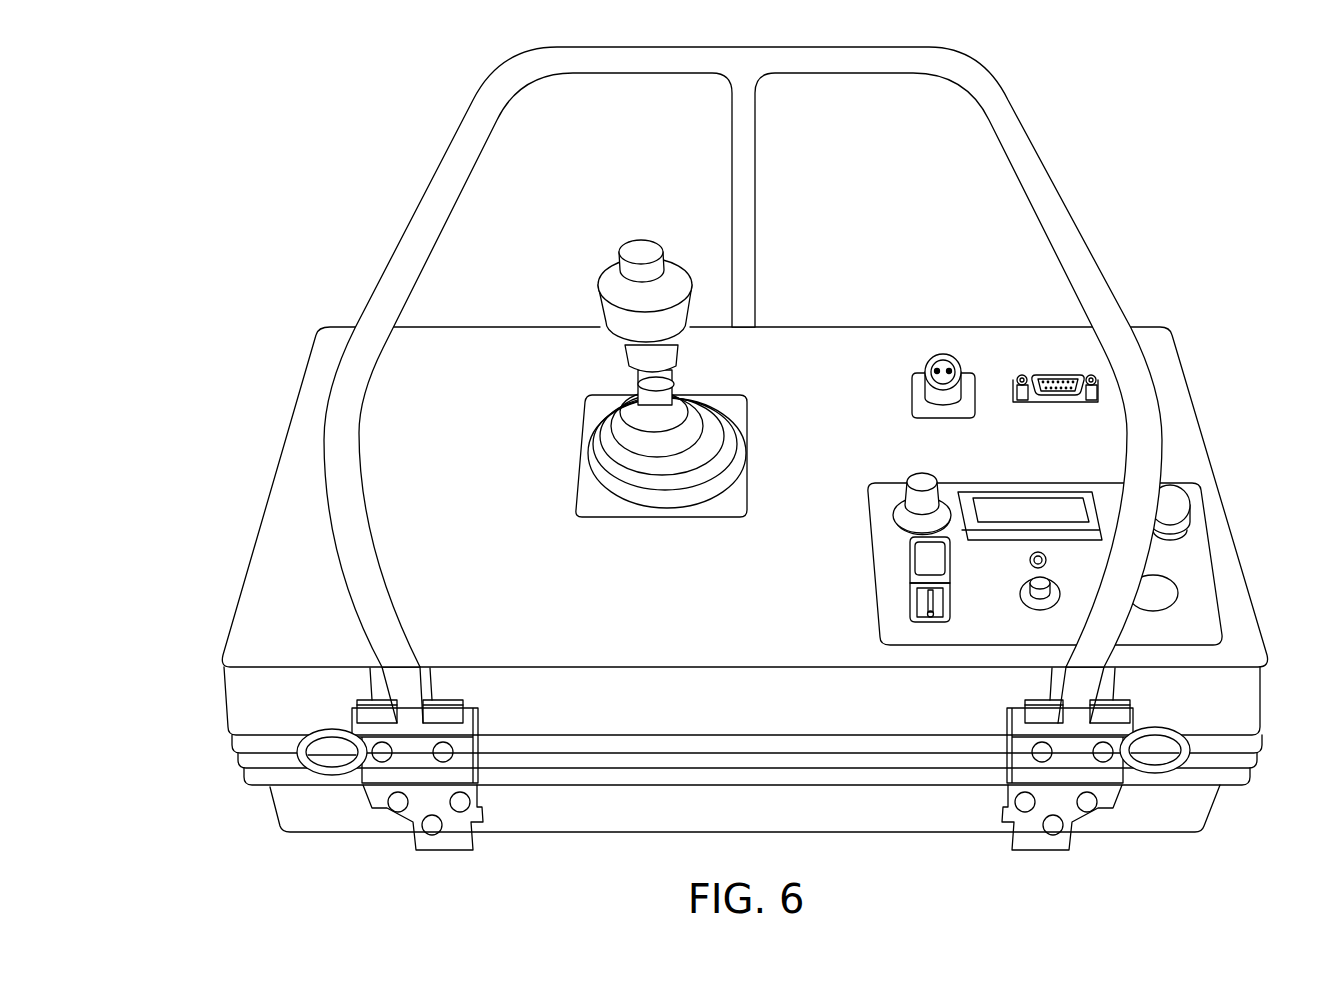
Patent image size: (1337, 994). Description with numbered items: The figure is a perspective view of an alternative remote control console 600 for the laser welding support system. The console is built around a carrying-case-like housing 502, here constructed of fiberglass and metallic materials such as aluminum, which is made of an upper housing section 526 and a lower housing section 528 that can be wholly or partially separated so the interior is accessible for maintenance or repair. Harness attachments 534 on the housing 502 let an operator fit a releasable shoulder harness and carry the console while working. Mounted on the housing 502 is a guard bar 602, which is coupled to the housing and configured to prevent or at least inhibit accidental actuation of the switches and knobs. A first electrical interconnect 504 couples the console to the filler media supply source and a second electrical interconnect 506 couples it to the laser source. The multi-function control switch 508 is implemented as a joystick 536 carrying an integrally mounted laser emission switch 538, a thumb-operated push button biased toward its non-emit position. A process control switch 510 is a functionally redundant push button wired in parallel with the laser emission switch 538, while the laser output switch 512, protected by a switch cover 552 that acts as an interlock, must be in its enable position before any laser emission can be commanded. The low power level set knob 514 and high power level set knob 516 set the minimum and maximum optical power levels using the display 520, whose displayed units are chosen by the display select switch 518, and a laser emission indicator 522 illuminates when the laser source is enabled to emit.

The control console 600 is at (720, 465).
The guard bar 602 is at (830, 69).
The housing 502 is at (720, 536).
The upper housing section 526 is at (290, 450).
The lower housing section 528 is at (590, 823).
The harness attachments 534 is at (327, 729).
The multi-function control switch 508 is at (602, 353).
The joystick 536 is at (703, 398).
The laser emission switch 538 is at (640, 247).
The first electrical interconnect 504 is at (940, 365).
The second electrical interconnect 506 is at (1055, 375).
The low power level set knob 514 is at (921, 484).
The display 520 is at (1011, 503).
The display select switch 518 is at (1037, 557).
The process control switch 510 is at (1030, 590).
The switch cover 552 is at (915, 548).
The laser output switch 512 is at (915, 606).
The high power level set knob 516 is at (1163, 512).
The laser emission indicator 522 is at (1172, 593).